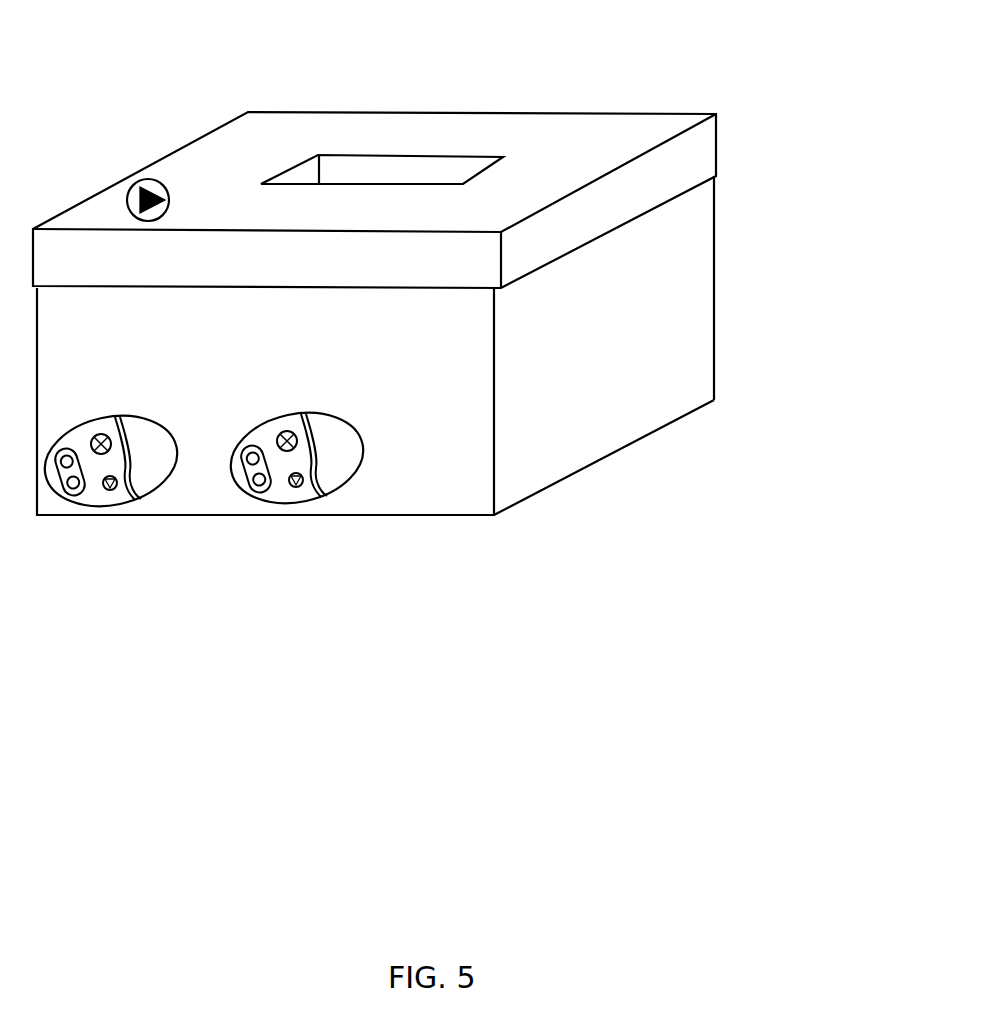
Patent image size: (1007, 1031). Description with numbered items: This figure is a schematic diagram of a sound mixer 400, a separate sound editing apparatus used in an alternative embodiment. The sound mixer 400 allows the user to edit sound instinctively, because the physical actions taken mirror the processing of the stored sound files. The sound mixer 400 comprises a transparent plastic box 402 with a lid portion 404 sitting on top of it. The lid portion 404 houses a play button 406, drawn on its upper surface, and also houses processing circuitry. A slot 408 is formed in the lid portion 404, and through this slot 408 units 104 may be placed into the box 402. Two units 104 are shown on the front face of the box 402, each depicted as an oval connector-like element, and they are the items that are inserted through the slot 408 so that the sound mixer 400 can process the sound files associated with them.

The units 104 is at (105, 507).
The sound mixer 400 is at (840, 170).
The transparent plastic box 402 is at (717, 261).
The lid portion 404 is at (717, 133).
The play button 406 is at (128, 185).
The slot 408 is at (351, 140).